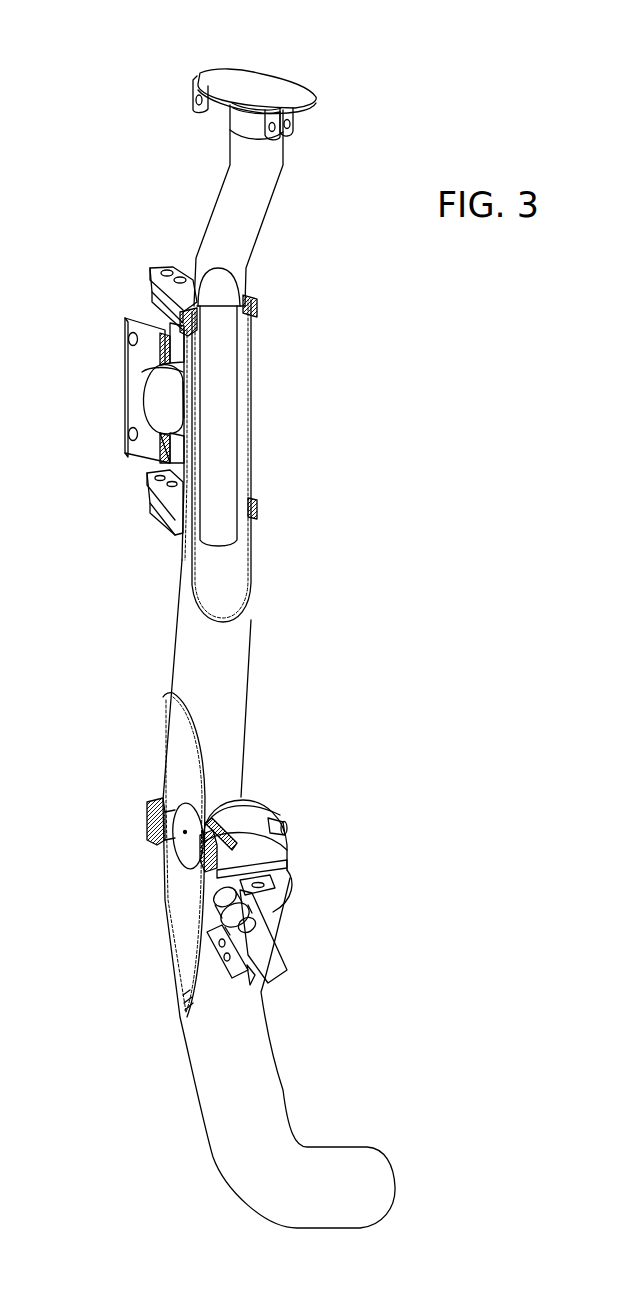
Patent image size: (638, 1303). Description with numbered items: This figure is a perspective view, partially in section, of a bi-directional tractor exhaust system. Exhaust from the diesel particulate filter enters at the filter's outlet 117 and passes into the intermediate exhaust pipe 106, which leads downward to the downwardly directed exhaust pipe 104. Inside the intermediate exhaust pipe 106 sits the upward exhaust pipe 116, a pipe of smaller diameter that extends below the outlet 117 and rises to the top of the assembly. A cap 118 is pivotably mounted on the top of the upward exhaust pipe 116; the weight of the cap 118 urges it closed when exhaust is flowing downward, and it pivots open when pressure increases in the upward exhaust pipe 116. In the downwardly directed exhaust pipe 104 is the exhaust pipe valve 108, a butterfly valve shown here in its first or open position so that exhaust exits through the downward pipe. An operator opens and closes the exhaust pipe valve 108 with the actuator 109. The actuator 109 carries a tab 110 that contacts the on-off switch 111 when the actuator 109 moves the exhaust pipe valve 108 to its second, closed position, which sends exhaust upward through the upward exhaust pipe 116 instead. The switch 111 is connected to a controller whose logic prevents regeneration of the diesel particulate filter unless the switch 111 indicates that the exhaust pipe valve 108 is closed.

The downwardly directed exhaust pipe 104 is at (260, 1073).
The intermediate exhaust pipe 106 is at (257, 347).
The exhaust pipe valve 108 is at (187, 850).
The actuator 109 is at (245, 827).
The tab 110 is at (287, 852).
The on-off switch 111 is at (227, 903).
The upward exhaust pipe 116 is at (253, 222).
The outlet of diesel particulate filter 117 is at (160, 393).
The cap 118 is at (266, 90).